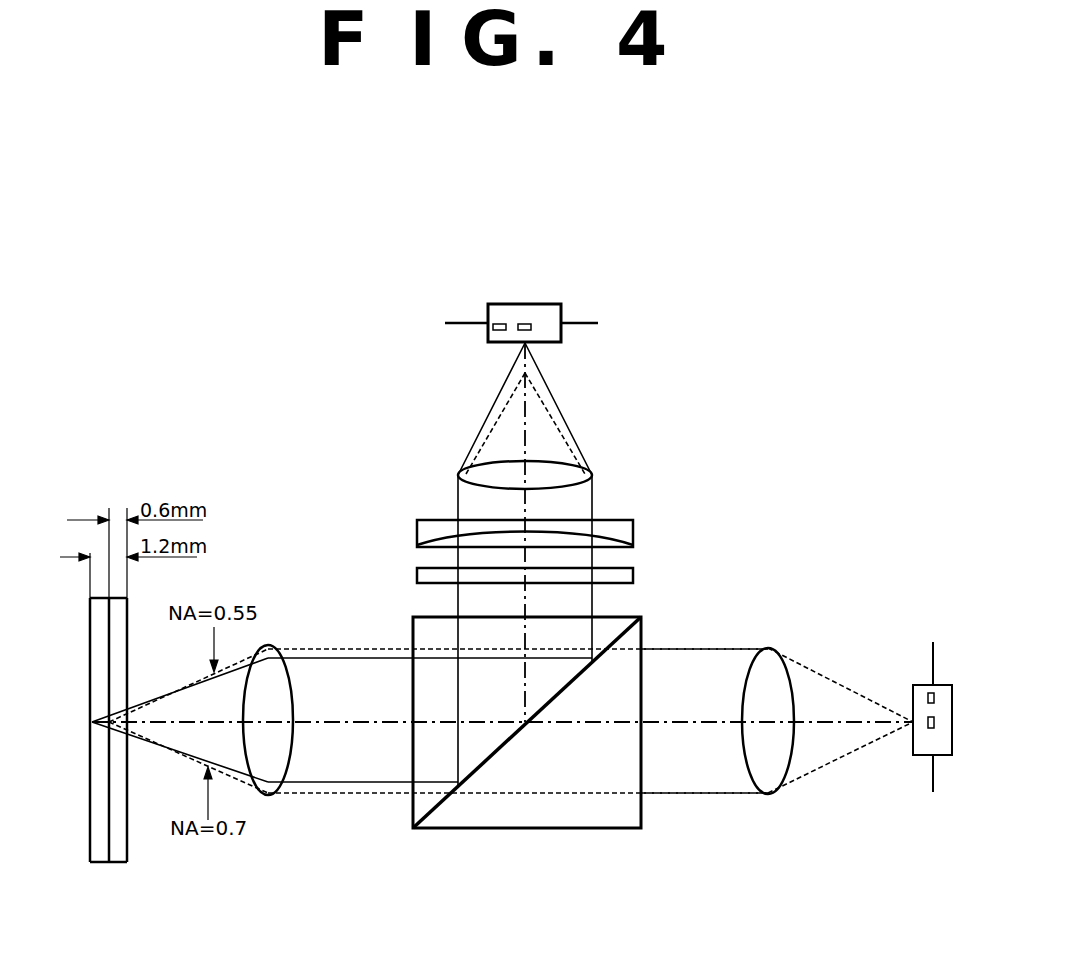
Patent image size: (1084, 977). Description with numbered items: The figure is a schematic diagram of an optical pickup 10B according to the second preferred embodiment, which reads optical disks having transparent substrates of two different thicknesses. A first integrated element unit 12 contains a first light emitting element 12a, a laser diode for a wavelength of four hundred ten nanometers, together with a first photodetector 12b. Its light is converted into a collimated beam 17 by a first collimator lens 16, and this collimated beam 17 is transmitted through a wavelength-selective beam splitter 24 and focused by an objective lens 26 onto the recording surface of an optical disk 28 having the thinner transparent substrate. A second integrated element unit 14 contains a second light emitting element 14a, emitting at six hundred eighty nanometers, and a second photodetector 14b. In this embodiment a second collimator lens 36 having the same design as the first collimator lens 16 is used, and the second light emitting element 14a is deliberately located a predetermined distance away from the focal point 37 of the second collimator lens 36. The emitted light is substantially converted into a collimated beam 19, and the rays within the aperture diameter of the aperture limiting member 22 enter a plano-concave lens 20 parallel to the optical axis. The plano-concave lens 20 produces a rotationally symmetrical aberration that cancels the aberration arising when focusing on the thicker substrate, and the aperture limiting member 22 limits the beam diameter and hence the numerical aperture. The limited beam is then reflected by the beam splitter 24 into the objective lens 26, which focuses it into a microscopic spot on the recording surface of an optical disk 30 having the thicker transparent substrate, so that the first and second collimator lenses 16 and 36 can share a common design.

The optical pickup 10B is at (358, 573).
The first integrated element unit 12 is at (942, 755).
The first light emitting element 12a is at (928, 729).
The first photodetector 12b is at (928, 697).
The second integrated element unit 14 is at (557, 308).
The second light emitting element 14a is at (524, 322).
The second photodetector 14b is at (499, 322).
The first collimator lens 16 is at (768, 794).
The collimated beam 17 is at (695, 797).
The collimated beam 19 is at (458, 497).
The plano-concave lens 20 is at (633, 532).
The aperture limiting member 22 is at (633, 575).
The wavelength-selective beam splitter 24 is at (532, 828).
The objective lens 26 is at (268, 790).
The optical disk 28 is at (125, 817).
The optical disk 30 is at (107, 862).
The second collimator lens 36 is at (590, 474).
The focal point 37 is at (526, 374).